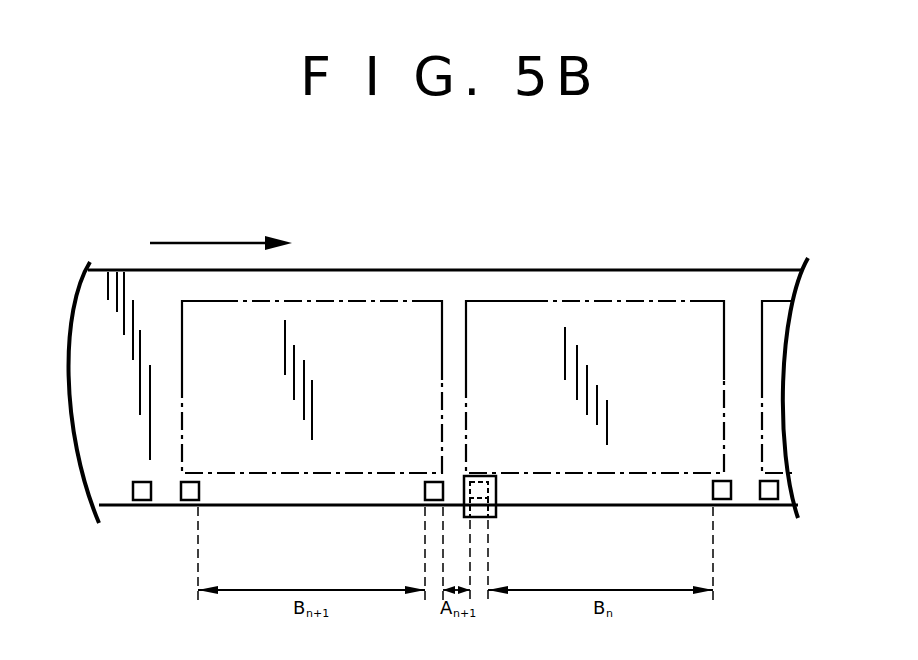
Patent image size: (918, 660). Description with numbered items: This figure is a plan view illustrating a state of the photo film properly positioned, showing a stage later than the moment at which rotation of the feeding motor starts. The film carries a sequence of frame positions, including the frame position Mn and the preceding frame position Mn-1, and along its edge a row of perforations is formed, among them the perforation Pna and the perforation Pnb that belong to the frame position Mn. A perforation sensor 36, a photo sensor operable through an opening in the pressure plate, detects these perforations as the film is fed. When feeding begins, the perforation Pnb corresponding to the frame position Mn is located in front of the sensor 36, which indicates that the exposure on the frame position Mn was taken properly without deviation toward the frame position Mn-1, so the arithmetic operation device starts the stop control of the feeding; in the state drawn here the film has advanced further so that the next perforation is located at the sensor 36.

The perforation sensor 36 is at (478, 476).
The frame position Mn is at (526, 300).
The frame position Mn-1 is at (774, 300).
The perforation Pnb is at (722, 499).
The perforation Pna is at (768, 499).